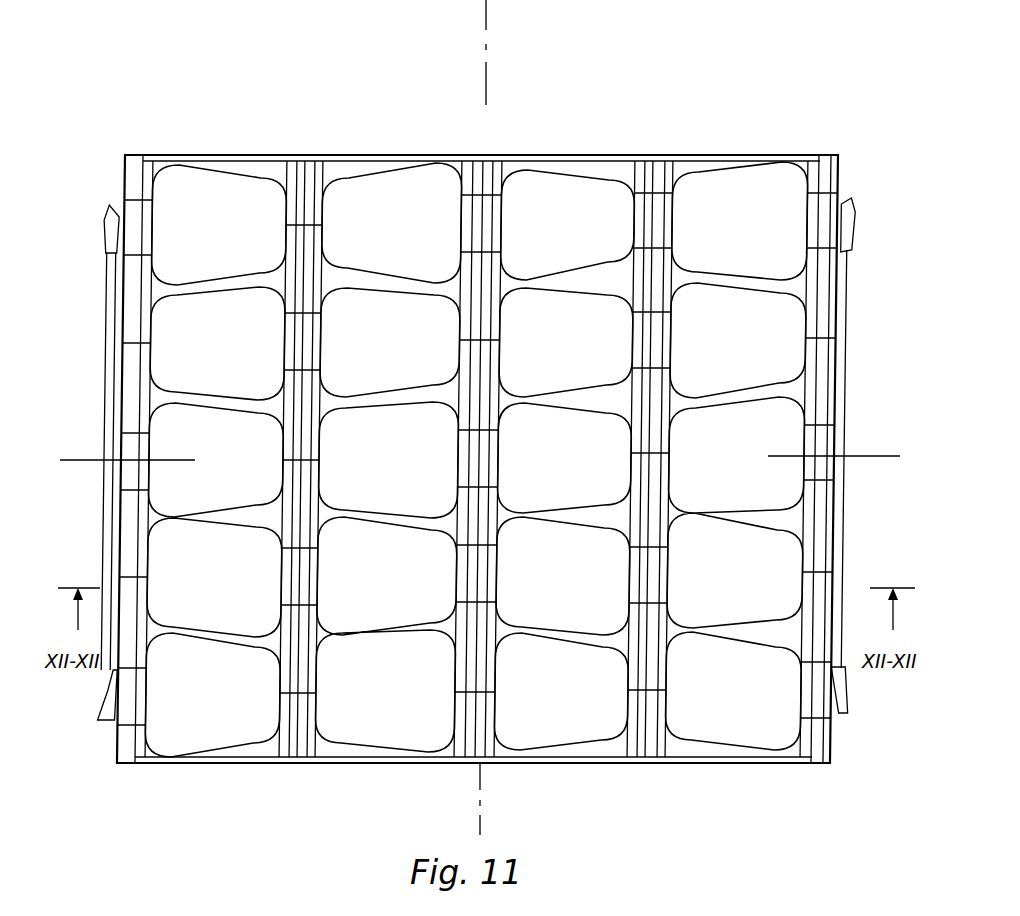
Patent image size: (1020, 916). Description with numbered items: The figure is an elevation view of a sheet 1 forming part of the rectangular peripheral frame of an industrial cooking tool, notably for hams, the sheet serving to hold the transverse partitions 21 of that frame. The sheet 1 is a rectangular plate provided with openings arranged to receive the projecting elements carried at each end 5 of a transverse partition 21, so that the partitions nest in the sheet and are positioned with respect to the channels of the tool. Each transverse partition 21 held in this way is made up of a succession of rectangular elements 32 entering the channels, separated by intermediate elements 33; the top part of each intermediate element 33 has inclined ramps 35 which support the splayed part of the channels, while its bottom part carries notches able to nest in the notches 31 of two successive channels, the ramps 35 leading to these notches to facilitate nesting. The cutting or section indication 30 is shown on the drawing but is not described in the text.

The sheet 1 is at (573, 237).
The end 5 is at (308, 155).
The transverse partition 21 is at (427, 141).
The section line 30 is at (863, 456).
The notch 31 is at (745, 155).
The rectangular element 32 is at (489, 10).
The intermediate element 33 is at (858, 217).
The ramp 35 is at (107, 361).